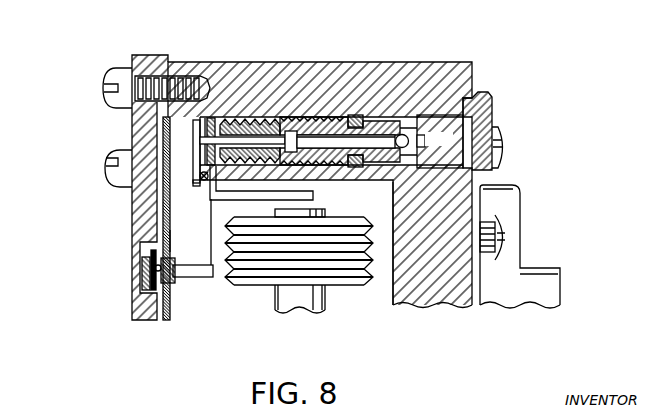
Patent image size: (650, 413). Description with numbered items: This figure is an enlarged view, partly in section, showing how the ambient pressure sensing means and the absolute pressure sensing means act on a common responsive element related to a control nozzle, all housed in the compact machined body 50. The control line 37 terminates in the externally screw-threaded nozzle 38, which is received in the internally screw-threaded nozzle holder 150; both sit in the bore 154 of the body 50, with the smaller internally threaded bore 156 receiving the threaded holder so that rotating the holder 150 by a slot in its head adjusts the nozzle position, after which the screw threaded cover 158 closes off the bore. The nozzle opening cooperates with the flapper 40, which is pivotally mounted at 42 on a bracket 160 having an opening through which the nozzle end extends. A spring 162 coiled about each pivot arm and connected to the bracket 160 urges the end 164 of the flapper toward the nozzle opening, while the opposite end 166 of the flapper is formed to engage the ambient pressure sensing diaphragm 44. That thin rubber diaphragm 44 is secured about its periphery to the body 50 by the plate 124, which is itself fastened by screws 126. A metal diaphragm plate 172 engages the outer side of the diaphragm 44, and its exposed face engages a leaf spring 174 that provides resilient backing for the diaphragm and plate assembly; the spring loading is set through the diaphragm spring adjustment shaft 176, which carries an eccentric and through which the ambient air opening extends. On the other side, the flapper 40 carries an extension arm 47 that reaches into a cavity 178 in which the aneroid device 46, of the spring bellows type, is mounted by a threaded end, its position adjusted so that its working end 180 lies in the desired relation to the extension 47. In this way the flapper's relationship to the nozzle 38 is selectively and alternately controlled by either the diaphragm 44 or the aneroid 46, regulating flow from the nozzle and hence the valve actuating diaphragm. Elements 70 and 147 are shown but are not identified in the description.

The line 37 is at (285, 118).
The nozzle 38 is at (247, 120).
The flapper 40 is at (209, 230).
The pivot 42 is at (197, 184).
The ambient pressure sensing diaphragm 44 is at (169, 240).
The aneroid device 46 is at (338, 280).
The extension arm 47 is at (313, 194).
The body 50 is at (460, 63).
The support bracket 70 is at (508, 257).
The plate 124 is at (128, 140).
The screws 126 is at (112, 73).
The plug 147 is at (440, 141).
The nozzle holder 150 is at (397, 130).
The bore 154 is at (372, 117).
The bore of smaller diameter 156 is at (265, 118).
The screw threaded cover 158 is at (490, 100).
The bracket 160 is at (213, 118).
The spring 162 is at (197, 127).
The end of the flapper 164 is at (192, 137).
The opposite end of the flapper 166 is at (197, 273).
The metal diaphragm plate 172 is at (163, 215).
The leaf spring 174 is at (150, 252).
The diaphragm spring adjustment shaft 176 is at (141, 277).
The cavity 178 is at (382, 283).
The working end 180 is at (313, 212).